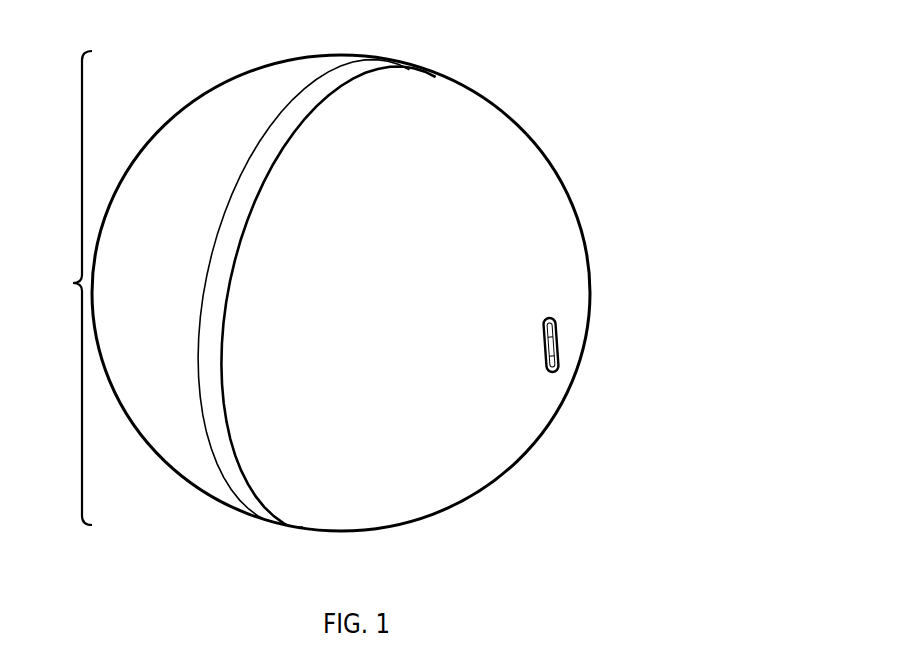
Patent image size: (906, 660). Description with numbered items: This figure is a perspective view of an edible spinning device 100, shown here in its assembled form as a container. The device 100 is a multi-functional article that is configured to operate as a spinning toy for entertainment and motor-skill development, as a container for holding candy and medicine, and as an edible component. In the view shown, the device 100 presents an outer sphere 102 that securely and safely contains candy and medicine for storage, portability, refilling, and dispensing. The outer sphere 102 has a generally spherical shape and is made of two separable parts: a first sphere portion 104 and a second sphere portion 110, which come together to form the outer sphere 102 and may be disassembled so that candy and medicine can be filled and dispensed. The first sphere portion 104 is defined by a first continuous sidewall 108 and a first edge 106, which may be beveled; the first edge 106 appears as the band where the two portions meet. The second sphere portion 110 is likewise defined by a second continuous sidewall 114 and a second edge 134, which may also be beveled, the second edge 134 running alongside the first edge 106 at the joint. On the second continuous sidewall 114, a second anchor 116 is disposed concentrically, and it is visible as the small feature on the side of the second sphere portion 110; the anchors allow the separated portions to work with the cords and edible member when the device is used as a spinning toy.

The edible spinning device 100 is at (718, 107).
The outer sphere 102 is at (62, 288).
The first sphere portion 104 is at (215, 83).
The first edge 106 is at (295, 100).
The first continuous sidewall 108 is at (182, 268).
The second sphere portion 110 is at (507, 115).
The second continuous sidewall 114 is at (345, 278).
The second anchor 116 is at (558, 334).
The second edge 134 is at (328, 100).